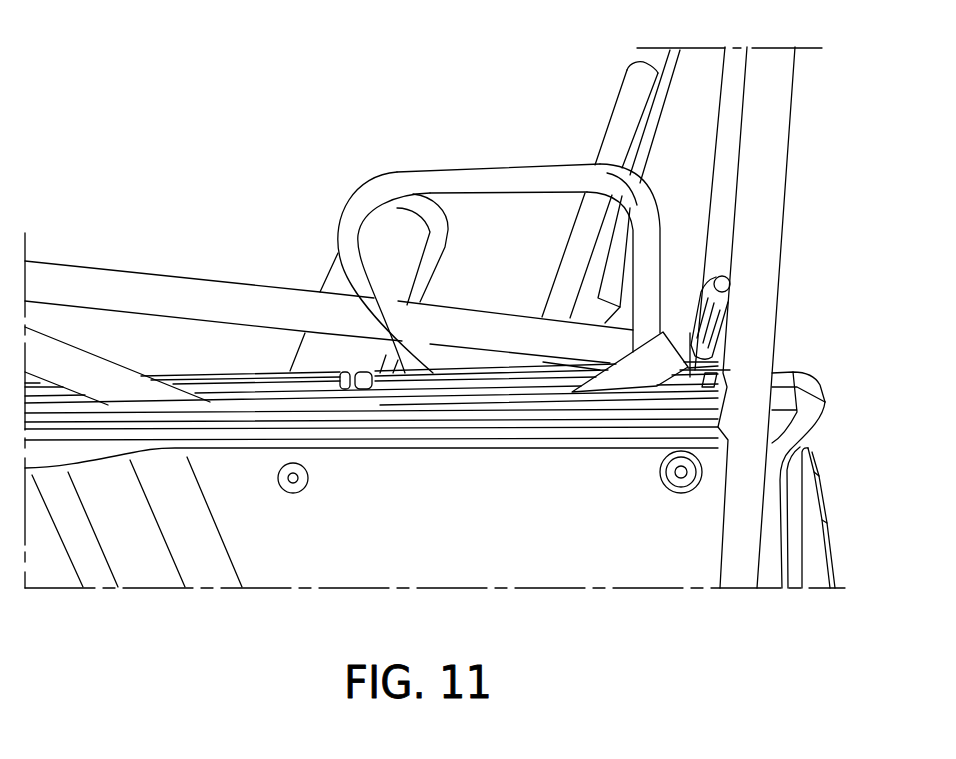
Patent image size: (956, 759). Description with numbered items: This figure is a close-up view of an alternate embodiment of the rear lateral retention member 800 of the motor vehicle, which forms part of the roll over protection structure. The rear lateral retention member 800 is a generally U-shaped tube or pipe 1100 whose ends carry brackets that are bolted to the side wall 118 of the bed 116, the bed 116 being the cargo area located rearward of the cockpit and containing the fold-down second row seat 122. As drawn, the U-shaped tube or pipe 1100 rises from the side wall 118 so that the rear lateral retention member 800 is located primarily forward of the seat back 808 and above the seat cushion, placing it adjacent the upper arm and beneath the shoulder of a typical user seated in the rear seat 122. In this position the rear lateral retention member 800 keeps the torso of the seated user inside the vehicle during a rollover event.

The bed 116 is at (170, 256).
The side wall 118 is at (496, 548).
The rear lateral retention member 800 is at (486, 158).
The seat back 808 is at (622, 123).
The U-shaped tube or pipe 1100 is at (642, 180).
The second row seat 122 is at (612, 278).